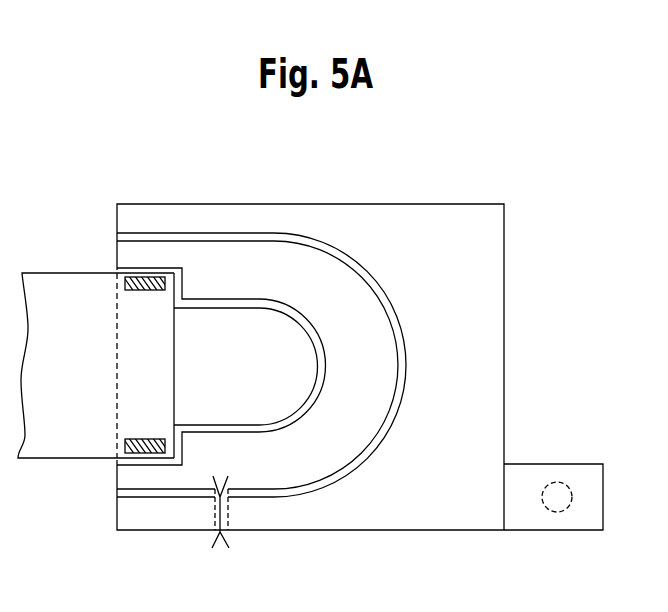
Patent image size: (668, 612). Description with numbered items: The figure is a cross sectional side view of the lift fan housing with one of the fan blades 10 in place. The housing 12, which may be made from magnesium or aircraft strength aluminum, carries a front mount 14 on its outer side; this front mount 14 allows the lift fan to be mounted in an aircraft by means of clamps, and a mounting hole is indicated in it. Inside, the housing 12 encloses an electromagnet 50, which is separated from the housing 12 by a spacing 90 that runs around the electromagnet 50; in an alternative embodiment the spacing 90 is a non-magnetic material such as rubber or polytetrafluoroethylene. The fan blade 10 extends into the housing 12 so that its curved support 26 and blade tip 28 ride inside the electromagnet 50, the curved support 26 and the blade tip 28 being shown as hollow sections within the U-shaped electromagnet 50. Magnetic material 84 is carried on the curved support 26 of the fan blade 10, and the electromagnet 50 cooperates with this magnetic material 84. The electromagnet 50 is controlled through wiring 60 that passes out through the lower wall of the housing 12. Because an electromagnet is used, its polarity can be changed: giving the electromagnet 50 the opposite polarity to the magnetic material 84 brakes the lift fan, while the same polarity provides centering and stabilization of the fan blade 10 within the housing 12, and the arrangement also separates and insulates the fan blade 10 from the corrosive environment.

The fan blade 10 is at (64, 437).
The housing 12 is at (231, 196).
The front mount 14 is at (583, 491).
The curved support 26 is at (159, 380).
The blade tip 28 is at (252, 380).
The electromagnet 50 is at (279, 471).
The wiring 60 is at (242, 541).
The magnetic material 84 is at (144, 467).
The spacing 90 is at (156, 222).